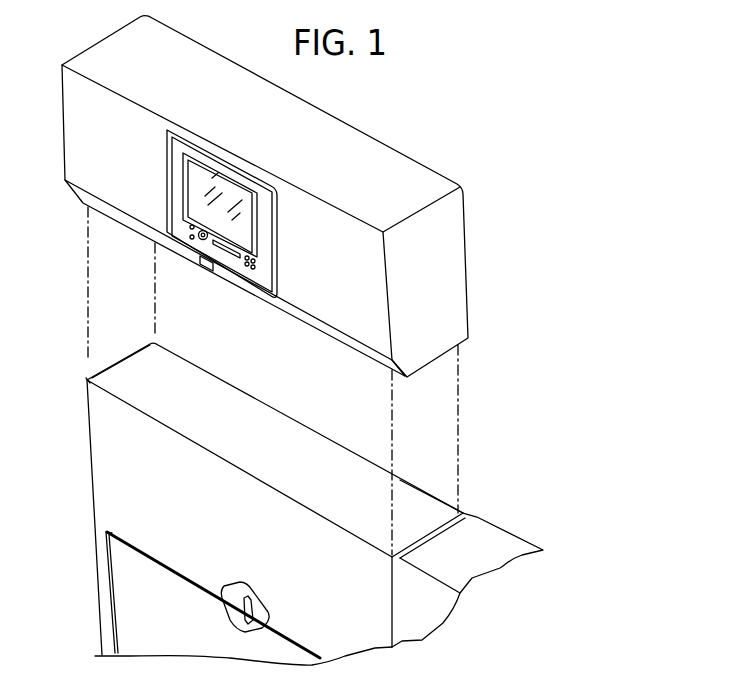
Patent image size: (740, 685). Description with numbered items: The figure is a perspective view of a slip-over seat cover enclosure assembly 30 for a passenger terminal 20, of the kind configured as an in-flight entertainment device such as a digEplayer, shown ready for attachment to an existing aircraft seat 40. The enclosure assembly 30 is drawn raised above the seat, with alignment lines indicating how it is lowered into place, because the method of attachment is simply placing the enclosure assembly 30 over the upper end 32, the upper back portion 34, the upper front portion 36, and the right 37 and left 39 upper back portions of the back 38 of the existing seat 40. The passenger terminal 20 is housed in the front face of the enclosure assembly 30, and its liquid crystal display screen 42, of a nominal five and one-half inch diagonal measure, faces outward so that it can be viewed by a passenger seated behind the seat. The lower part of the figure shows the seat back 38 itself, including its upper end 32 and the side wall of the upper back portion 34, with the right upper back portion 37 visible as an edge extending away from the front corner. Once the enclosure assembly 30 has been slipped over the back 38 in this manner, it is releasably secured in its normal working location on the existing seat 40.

The passenger terminal 20 is at (245, 213).
The slip-over seat cover enclosure assembly 30 is at (384, 174).
The upper end 32 is at (153, 397).
The upper back portion 34 is at (130, 442).
The upper front portion 36 is at (440, 493).
The right upper back portion 37 is at (438, 535).
The back 38 is at (86, 380).
The left upper back portion 39 is at (128, 347).
The existing seat 40 is at (88, 570).
The liquid crystal display screen 42 is at (237, 190).